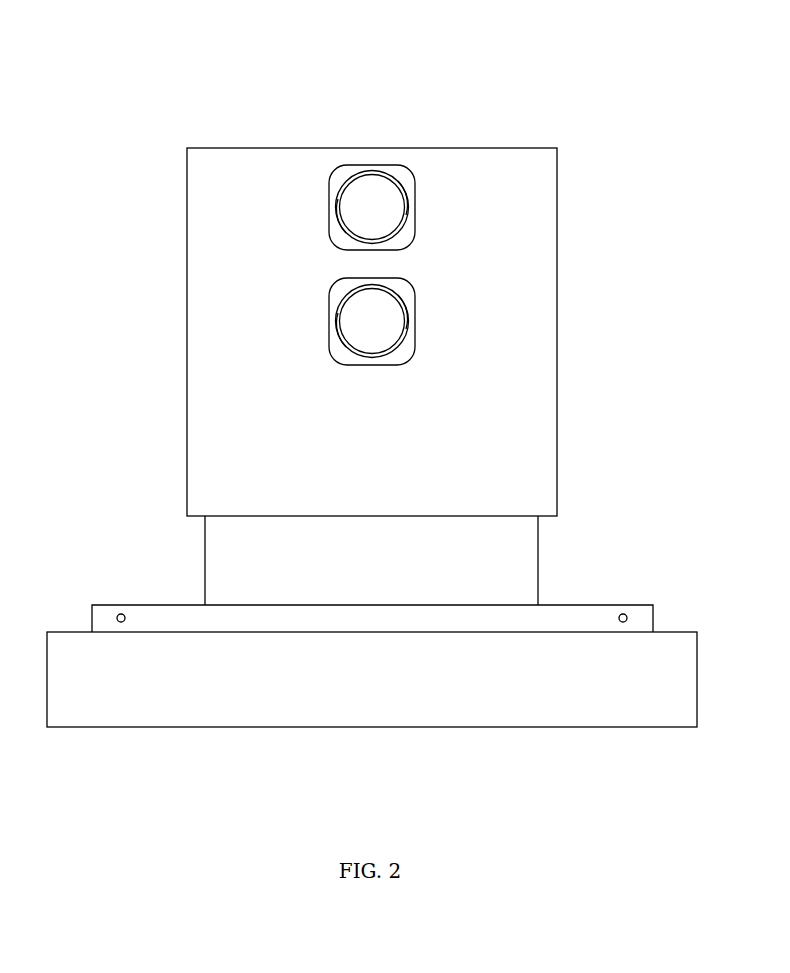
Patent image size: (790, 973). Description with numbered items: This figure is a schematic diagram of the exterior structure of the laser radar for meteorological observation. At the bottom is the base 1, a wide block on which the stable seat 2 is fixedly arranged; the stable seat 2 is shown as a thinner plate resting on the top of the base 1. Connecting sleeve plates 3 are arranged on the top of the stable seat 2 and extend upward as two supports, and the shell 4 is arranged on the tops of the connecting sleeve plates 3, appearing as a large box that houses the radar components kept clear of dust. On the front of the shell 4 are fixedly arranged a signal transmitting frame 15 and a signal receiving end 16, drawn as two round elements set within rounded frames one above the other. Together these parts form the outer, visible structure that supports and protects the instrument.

The base 1 is at (138, 690).
The stable seat 2 is at (148, 605).
The connecting sleeve plates 3 is at (507, 567).
The shell 4 is at (517, 381).
The signal transmitting frame 15 is at (372, 192).
The signal receiving end 16 is at (378, 330).